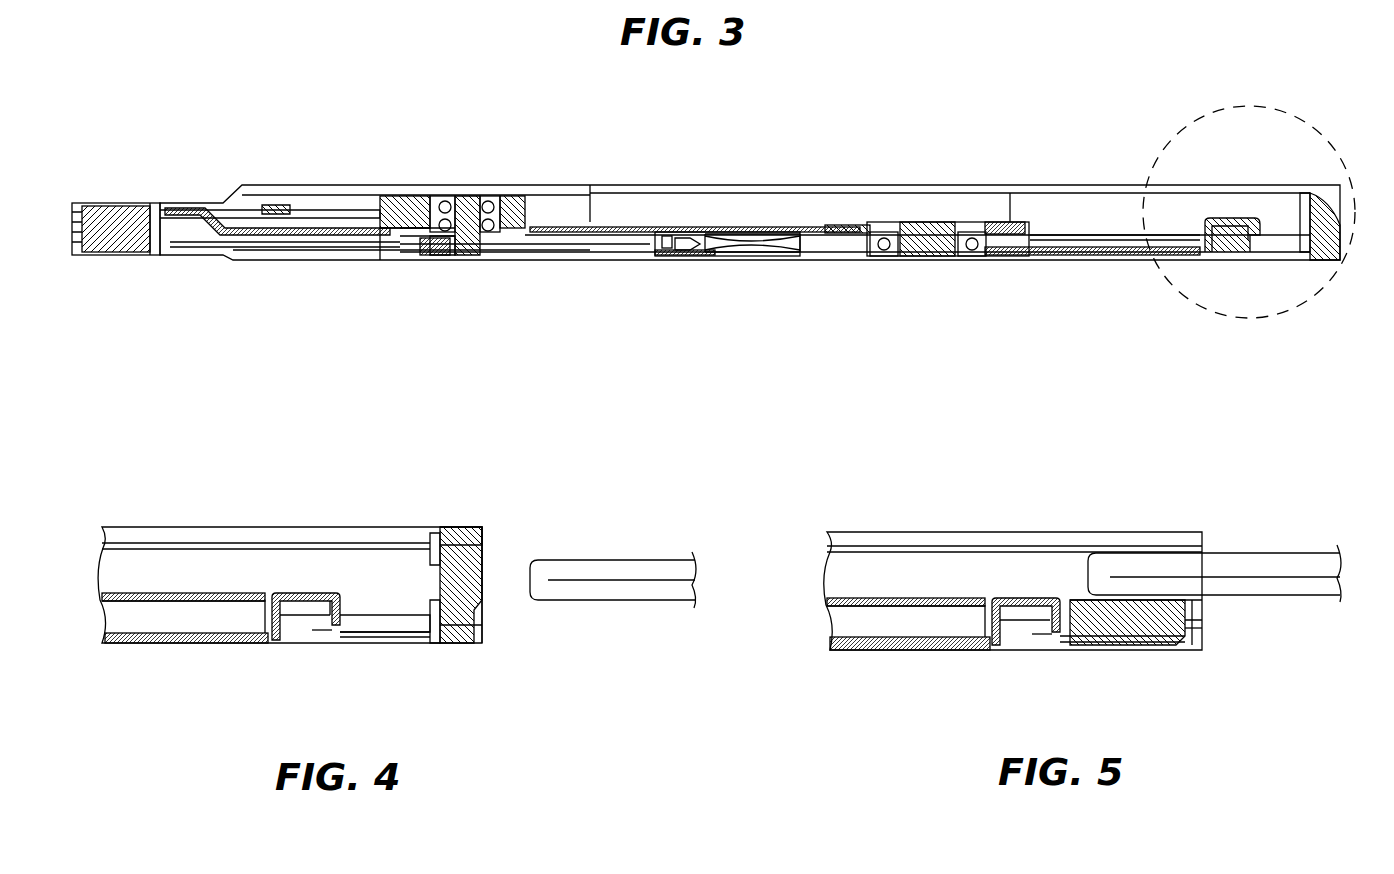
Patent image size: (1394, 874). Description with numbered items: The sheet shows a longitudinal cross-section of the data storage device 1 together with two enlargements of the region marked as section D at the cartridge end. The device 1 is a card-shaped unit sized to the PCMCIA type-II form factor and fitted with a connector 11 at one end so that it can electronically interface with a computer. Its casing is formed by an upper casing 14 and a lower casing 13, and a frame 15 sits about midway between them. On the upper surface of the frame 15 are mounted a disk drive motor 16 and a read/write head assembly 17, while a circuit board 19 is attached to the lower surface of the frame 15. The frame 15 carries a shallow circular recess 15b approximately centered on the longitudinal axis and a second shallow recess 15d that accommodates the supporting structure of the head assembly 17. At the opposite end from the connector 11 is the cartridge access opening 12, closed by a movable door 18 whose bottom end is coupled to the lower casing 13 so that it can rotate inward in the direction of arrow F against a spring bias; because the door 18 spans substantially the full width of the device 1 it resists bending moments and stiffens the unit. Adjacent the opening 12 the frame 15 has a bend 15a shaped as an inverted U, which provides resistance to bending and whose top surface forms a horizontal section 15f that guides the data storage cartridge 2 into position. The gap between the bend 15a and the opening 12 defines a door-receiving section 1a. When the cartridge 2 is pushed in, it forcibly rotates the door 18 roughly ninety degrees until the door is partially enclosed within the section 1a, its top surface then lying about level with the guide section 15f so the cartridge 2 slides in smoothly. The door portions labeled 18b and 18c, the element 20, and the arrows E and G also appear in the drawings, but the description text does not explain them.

In FIG. 3, the data storage device 1 is at (750, 90).
In FIG. 4, the data storage device 1 is at (208, 522).
In FIG. 5, the data storage device 1 is at (1013, 591).
In FIG. 4, the door-receiving section 1a is at (358, 608).
In FIG. 4, the data storage cartridge 2 is at (578, 545).
In FIG. 5, the data storage cartridge 2 is at (1272, 535).
In FIG. 3, the connector 11 is at (100, 203).
In FIG. 3, the cartridge access opening 12 is at (1348, 222).
In FIG. 4, the cartridge access opening 12 is at (494, 606).
In FIG. 3, the lower casing 13 is at (270, 262).
In FIG. 4, the lower casing 13 is at (230, 645).
In FIG. 5, the lower casing 13 is at (952, 650).
In FIG. 3, the upper casing 14 is at (322, 190).
In FIG. 3, the frame 15 is at (855, 236).
In FIG. 4, the frame 15 is at (160, 645).
In FIG. 5, the frame 15 is at (860, 650).
In FIG. 3, the bend 15a is at (1235, 226).
In FIG. 4, the bend 15a is at (330, 615).
In FIG. 5, the bend 15a is at (1048, 622).
In FIG. 3, the shallow recess 15b is at (1025, 262).
In FIG. 3, the shallow recess 15d is at (430, 250).
In FIG. 4, the horizontal section 15f is at (303, 592).
In FIG. 5, the horizontal section 15f is at (1022, 598).
In FIG. 3, the disk drive motor 16 is at (990, 220).
In FIG. 3, the read/write head assembly 17 is at (486, 172).
In FIG. 4, the movable door 18 is at (458, 560).
In FIG. 5, the movable door 18 is at (1132, 622).
In FIG. 4, the core holder flange 18b is at (468, 532).
In FIG. 5, the core holder flange 18b is at (1073, 598).
In FIG. 4, the core holder groove 18c is at (452, 645).
In FIG. 5, the core holder groove 18c is at (1190, 628).
In FIG. 3, the circuit board 19 is at (205, 248).
In FIG. 4, the slot 20 is at (428, 648).
In FIG. 5, the slot 20 is at (1132, 650).
In FIG. 3, the section D is at (1305, 116).
In FIG. 4, the insertion direction E is at (522, 579).
In FIG. 4, the arrow F is at (428, 562).
In FIG. 5, the movement direction G is at (1072, 579).